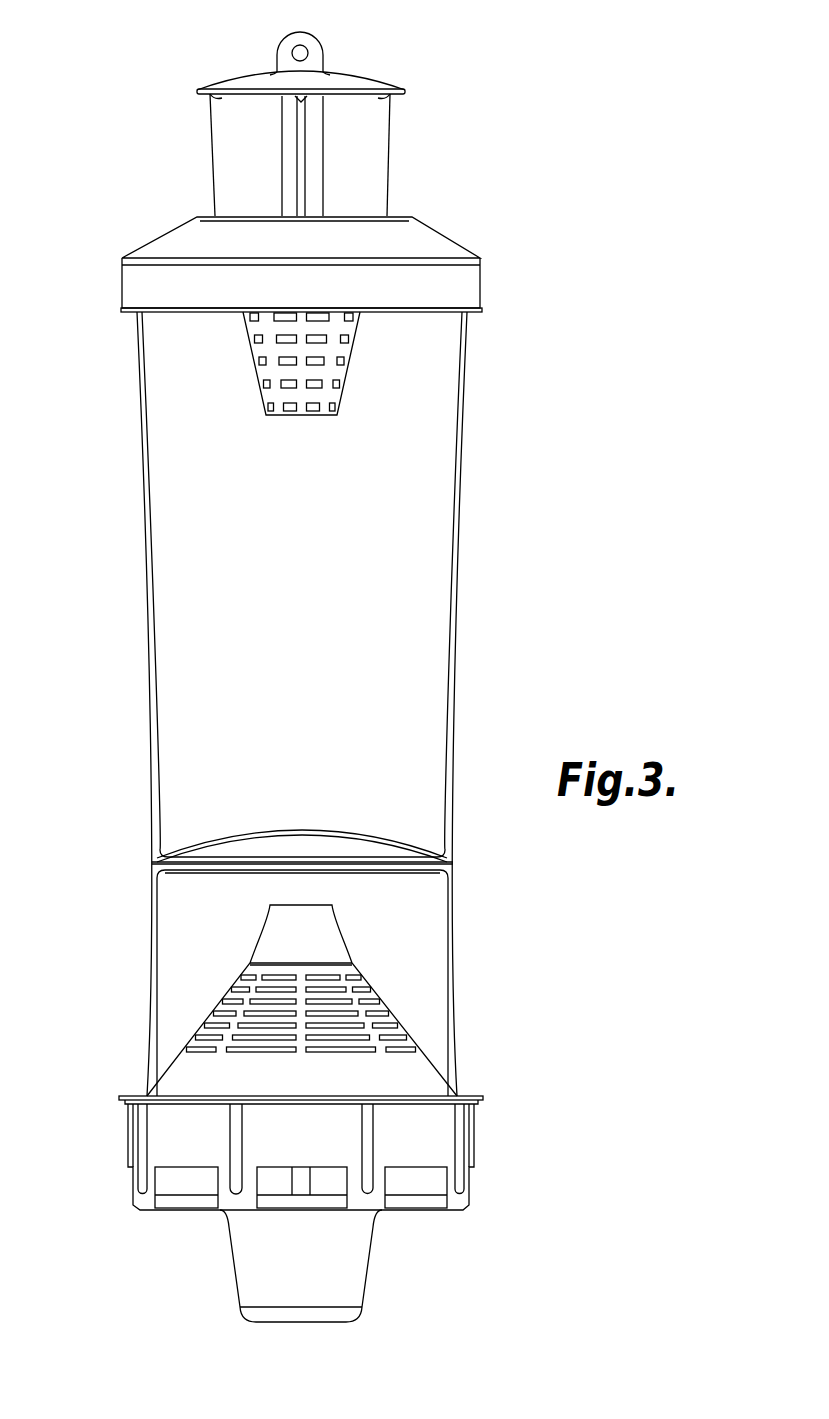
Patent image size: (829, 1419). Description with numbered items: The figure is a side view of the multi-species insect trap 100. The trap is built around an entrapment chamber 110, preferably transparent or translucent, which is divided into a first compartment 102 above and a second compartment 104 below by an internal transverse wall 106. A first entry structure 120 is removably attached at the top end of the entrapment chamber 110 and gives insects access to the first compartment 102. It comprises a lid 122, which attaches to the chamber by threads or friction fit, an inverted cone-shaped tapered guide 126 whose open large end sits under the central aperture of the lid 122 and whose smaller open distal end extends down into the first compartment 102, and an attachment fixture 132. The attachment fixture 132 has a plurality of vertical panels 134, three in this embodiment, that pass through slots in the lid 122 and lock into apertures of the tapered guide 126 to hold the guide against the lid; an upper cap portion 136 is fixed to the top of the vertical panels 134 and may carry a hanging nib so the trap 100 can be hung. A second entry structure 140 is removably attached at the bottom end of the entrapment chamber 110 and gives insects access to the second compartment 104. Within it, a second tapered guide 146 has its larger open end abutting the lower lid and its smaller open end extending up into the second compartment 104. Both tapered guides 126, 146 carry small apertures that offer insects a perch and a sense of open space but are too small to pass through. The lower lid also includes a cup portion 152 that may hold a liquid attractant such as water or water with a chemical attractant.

The multi-species insect trap 100 is at (467, 85).
The first compartment 102 is at (430, 553).
The second compartment 104 is at (182, 917).
The internal transverse wall 106 is at (218, 840).
The entrapment chamber 110 is at (458, 688).
The first entry structure 120 is at (450, 231).
The lid 122 is at (138, 283).
The tapered guide 126 is at (353, 360).
The attachment fixture 132 is at (397, 156).
The vertical panels 134 is at (232, 161).
The upper cap portion 136 is at (355, 79).
The second entry structure 140 is at (478, 1132).
The second tapered guide 146 is at (355, 953).
The cup portion 152 is at (352, 1258).